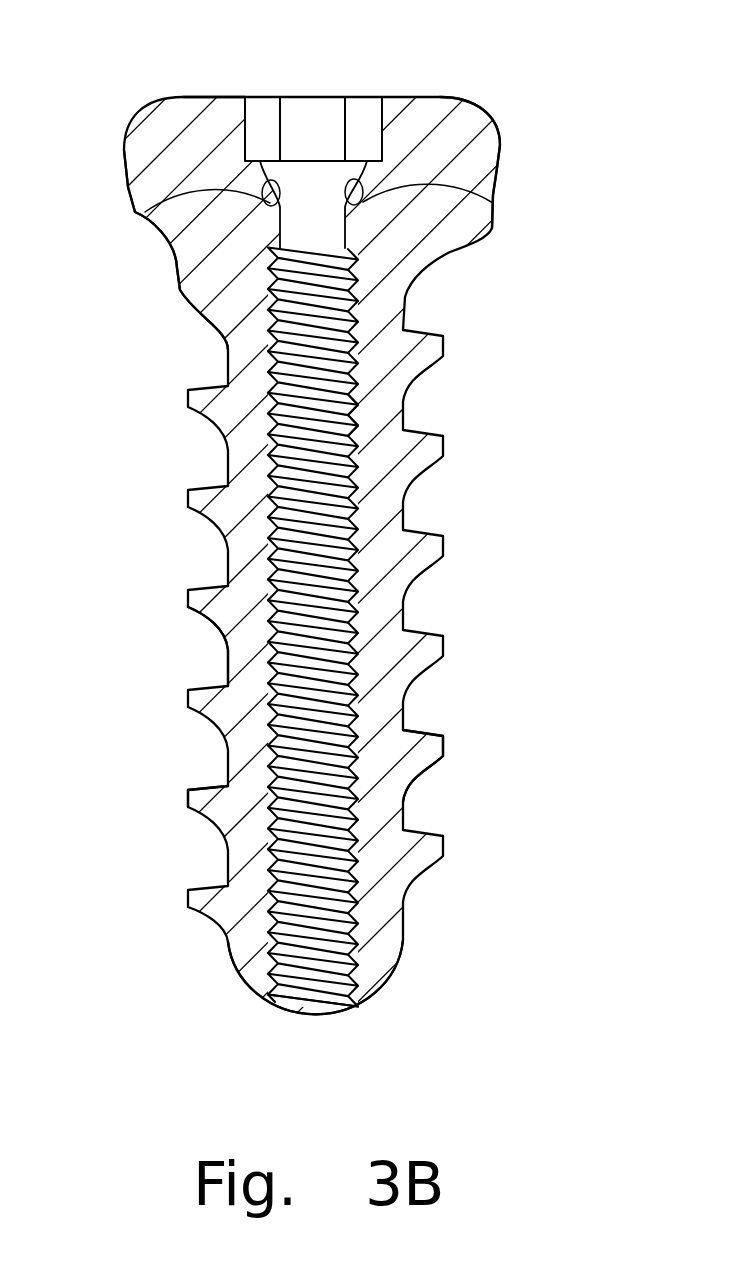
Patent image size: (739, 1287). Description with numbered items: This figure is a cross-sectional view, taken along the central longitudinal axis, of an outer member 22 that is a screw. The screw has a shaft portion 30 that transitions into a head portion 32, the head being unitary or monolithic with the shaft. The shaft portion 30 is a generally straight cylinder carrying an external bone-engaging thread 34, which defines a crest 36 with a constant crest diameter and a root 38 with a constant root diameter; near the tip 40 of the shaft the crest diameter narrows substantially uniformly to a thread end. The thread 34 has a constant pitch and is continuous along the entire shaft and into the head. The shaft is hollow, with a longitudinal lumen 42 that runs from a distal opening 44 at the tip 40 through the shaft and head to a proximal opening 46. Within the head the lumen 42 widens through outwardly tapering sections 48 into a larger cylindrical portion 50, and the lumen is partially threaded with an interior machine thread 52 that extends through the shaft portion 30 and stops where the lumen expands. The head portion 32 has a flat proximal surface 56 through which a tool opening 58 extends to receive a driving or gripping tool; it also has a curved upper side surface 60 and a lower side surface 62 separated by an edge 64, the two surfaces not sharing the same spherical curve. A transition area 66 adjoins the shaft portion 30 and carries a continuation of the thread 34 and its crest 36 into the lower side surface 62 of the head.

The outer member 22 is at (522, 102).
The shaft portion 30 is at (458, 601).
The head portion 32 is at (117, 125).
The external thread 34 is at (444, 743).
The crest 36 is at (188, 797).
The root 38 is at (226, 648).
The tip 40 is at (373, 1001).
The lumen 42 is at (328, 228).
The distal opening 44 is at (312, 1018).
The proximal opening 46 is at (355, 107).
The outwardly tapering section 48 is at (493, 203).
The larger cylindrical portion 50 is at (165, 200).
The interior thread 52 is at (352, 412).
The flat proximal surface 56 is at (218, 97).
The tool opening 58 is at (300, 115).
The upper side surface 60 is at (474, 105).
The lower side surface 62 is at (505, 153).
The edge 64 is at (120, 142).
The transition area 66 is at (168, 260).